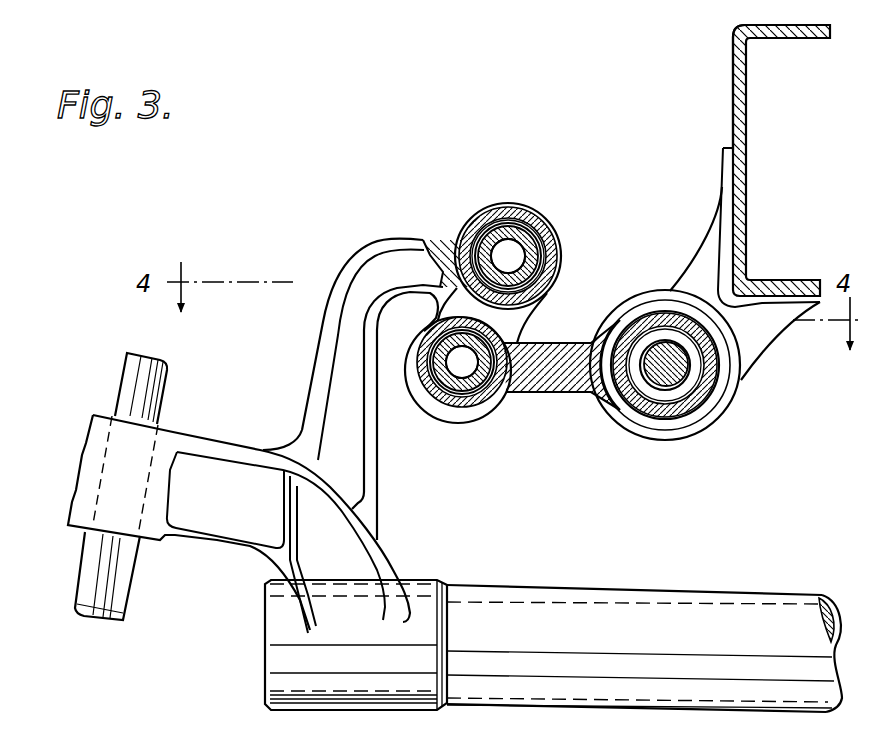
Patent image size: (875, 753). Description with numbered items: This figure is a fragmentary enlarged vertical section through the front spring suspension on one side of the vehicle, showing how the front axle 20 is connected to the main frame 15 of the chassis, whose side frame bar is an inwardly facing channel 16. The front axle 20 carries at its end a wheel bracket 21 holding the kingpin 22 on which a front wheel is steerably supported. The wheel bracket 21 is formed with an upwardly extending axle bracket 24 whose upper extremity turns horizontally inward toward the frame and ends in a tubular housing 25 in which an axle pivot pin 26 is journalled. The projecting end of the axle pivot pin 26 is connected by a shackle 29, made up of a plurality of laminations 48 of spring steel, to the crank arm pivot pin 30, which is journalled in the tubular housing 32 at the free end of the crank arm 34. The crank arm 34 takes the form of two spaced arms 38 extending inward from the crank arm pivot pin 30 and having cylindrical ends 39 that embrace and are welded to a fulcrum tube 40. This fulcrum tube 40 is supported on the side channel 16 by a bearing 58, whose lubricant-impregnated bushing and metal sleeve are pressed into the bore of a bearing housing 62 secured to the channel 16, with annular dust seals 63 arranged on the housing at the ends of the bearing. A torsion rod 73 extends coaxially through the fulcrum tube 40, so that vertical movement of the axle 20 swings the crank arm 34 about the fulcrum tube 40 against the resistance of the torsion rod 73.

The main frame 15 is at (750, 108).
The channel 16 is at (733, 72).
The front axle 20 is at (765, 600).
The wheel bracket 21 is at (213, 538).
The kingpin 22 is at (125, 373).
The axle bracket 24 is at (360, 263).
The tubular housing 25 is at (505, 212).
The axle pivot pin 26 is at (524, 246).
The shackle 29 is at (565, 254).
The crank arm pivot pin 30 is at (470, 387).
The tubular housing 32 is at (450, 405).
The crank arm 34 is at (548, 394).
The spaced arm 38 is at (556, 343).
The cylindrical end 39 is at (712, 401).
The fulcrum tube 40 is at (662, 413).
The lamination 48 is at (553, 273).
The bearing 58 is at (752, 358).
The bearing housing 62 is at (724, 158).
The dust seal 63 is at (697, 422).
The torsion rod 73 is at (650, 382).